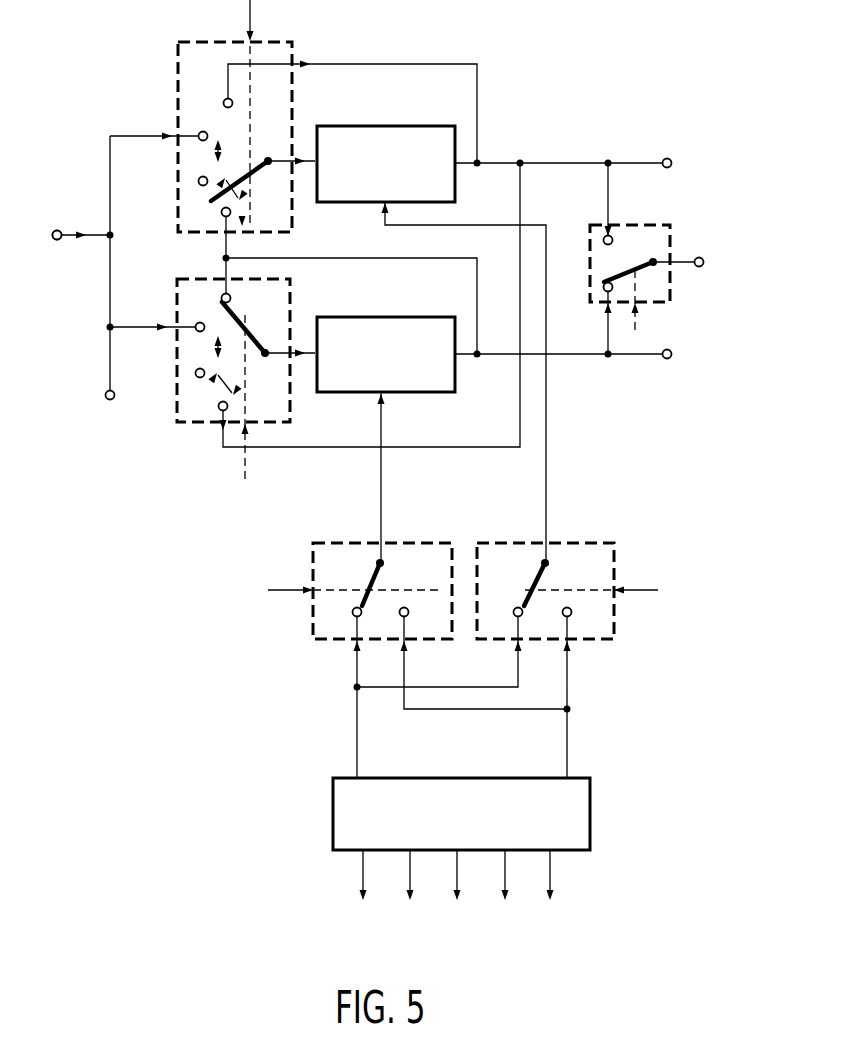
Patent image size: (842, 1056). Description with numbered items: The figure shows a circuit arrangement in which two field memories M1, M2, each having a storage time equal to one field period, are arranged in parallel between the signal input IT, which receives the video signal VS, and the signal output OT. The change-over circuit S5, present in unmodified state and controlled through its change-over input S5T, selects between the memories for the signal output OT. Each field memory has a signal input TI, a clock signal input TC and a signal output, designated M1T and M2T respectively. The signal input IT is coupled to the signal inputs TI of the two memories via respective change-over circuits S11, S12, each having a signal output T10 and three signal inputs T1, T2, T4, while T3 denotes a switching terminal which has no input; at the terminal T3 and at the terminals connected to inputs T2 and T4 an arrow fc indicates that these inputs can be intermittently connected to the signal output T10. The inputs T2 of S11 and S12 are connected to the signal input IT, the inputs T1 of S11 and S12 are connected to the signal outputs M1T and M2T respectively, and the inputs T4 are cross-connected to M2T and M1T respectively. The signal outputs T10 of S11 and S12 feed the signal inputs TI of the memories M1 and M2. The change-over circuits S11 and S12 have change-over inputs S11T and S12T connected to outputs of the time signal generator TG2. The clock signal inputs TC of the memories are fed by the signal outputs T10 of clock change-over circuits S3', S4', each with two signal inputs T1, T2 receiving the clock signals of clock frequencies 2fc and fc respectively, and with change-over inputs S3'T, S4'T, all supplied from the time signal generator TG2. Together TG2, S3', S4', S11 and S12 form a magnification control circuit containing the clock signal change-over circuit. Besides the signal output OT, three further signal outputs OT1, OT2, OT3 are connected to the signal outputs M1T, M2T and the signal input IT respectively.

The change-over circuit S11 is at (176, 73).
The change-over circuit S12 is at (176, 400).
The change-over circuit S5 is at (640, 227).
The change-over circuit S4' is at (358, 591).
The change-over circuit S3' is at (559, 591).
The field memory M1 is at (376, 125).
The field memory M2 is at (448, 317).
The time signal generator TG2 is at (302, 838).
The video signal VS is at (90, 233).
The signal input IT is at (61, 240).
The signal output OT1 is at (667, 158).
The signal output OT2 is at (667, 360).
The signal output OT3 is at (104, 396).
The signal output OT is at (698, 256).
The change-over input S11T is at (253, 38).
The change-over input S12T is at (247, 428).
The change-over input S5T is at (640, 305).
The change-over input S4'T is at (392, 745).
The change-over input S3'T is at (550, 745).
The signal input T1 is at (291, 64).
The signal input T2 is at (180, 134).
The switching terminal T3 is at (198, 181).
The signal input T4 is at (222, 230).
The signal output T10 is at (269, 168).
The signal input TI is at (314, 158).
The clock signal input TC is at (383, 222).
The signal output M1T is at (457, 168).
The signal output M2T is at (457, 360).
The clock frequency fc is at (380, 476).
The clock frequency 2fc is at (353, 796).